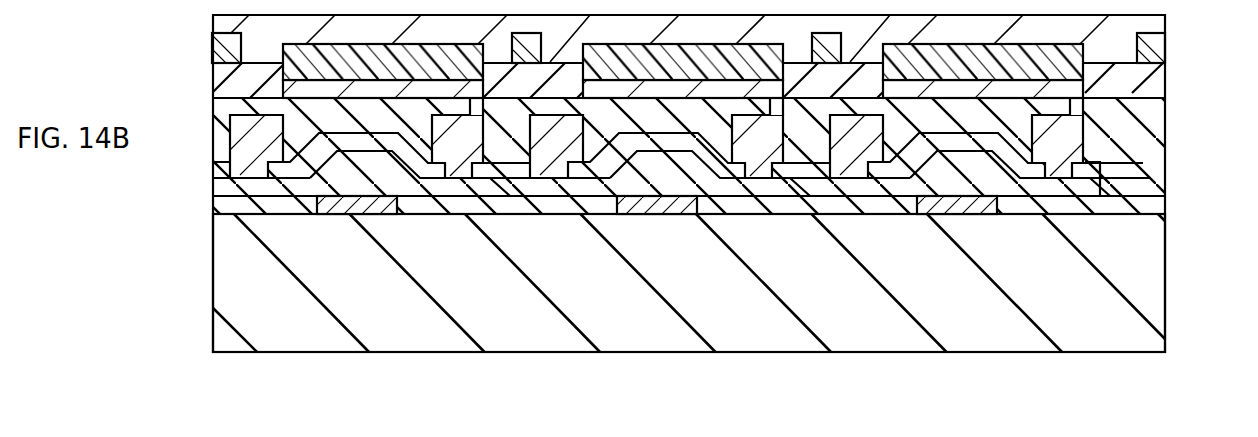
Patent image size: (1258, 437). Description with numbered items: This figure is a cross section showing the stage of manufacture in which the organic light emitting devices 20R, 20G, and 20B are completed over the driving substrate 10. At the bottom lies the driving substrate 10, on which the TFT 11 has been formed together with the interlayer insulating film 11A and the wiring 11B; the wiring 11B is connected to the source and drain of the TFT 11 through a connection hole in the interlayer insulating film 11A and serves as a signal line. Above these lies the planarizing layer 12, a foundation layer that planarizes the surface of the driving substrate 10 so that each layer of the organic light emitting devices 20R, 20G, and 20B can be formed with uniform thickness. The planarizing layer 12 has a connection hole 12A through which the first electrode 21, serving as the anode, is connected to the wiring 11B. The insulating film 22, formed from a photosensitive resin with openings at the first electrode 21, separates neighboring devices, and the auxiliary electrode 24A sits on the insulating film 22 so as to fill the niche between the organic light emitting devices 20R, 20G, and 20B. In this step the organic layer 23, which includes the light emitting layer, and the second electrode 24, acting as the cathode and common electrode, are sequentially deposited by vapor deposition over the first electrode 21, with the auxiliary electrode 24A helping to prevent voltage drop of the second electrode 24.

The driving substrate 10 is at (1157, 265).
The TFT 11 is at (320, 196).
The interlayer insulating film 11A is at (1090, 188).
The wiring 11B is at (1065, 148).
The planarizing layer 12 is at (1157, 128).
The connection hole 12A is at (1077, 100).
The organic light emitting device generating red light 20R is at (420, 117).
The organic light emitting device generating green light 20G is at (720, 117).
The organic light emitting device generating blue light 20B is at (1020, 117).
The first electrode 21 is at (305, 89).
The insulating film 22 is at (1166, 72).
The organic layer 23 is at (300, 50).
The second electrode 24 is at (222, 25).
The auxiliary electrode 24A is at (1150, 42).